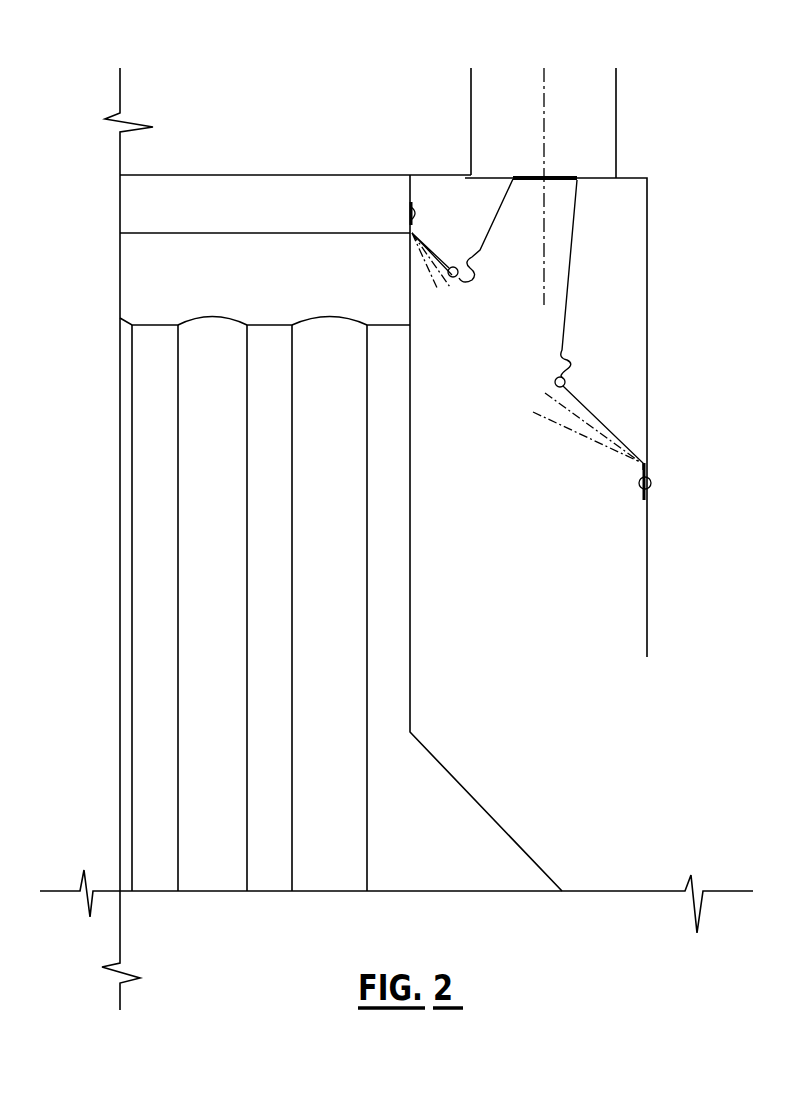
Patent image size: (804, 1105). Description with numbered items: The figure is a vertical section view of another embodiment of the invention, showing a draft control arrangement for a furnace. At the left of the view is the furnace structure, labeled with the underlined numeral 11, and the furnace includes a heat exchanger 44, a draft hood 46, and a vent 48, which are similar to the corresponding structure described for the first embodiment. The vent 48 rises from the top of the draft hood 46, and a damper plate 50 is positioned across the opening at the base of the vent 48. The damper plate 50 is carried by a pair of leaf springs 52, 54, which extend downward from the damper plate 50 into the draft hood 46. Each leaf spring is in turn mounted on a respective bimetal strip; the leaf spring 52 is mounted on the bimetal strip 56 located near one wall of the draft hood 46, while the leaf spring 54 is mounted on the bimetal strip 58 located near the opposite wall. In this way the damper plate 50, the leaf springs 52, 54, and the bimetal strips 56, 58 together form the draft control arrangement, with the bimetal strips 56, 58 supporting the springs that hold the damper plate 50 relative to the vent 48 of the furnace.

The furnace 11 is at (319, 279).
The heat exchanger 44 is at (410, 446).
The draft hood 46 is at (652, 324).
The vent 48 is at (616, 104).
The damper plate 50 is at (590, 178).
The leaf spring 52 is at (491, 221).
The leaf spring 54 is at (567, 293).
The bimetal strip 56 is at (438, 256).
The bimetal strip 58 is at (585, 411).